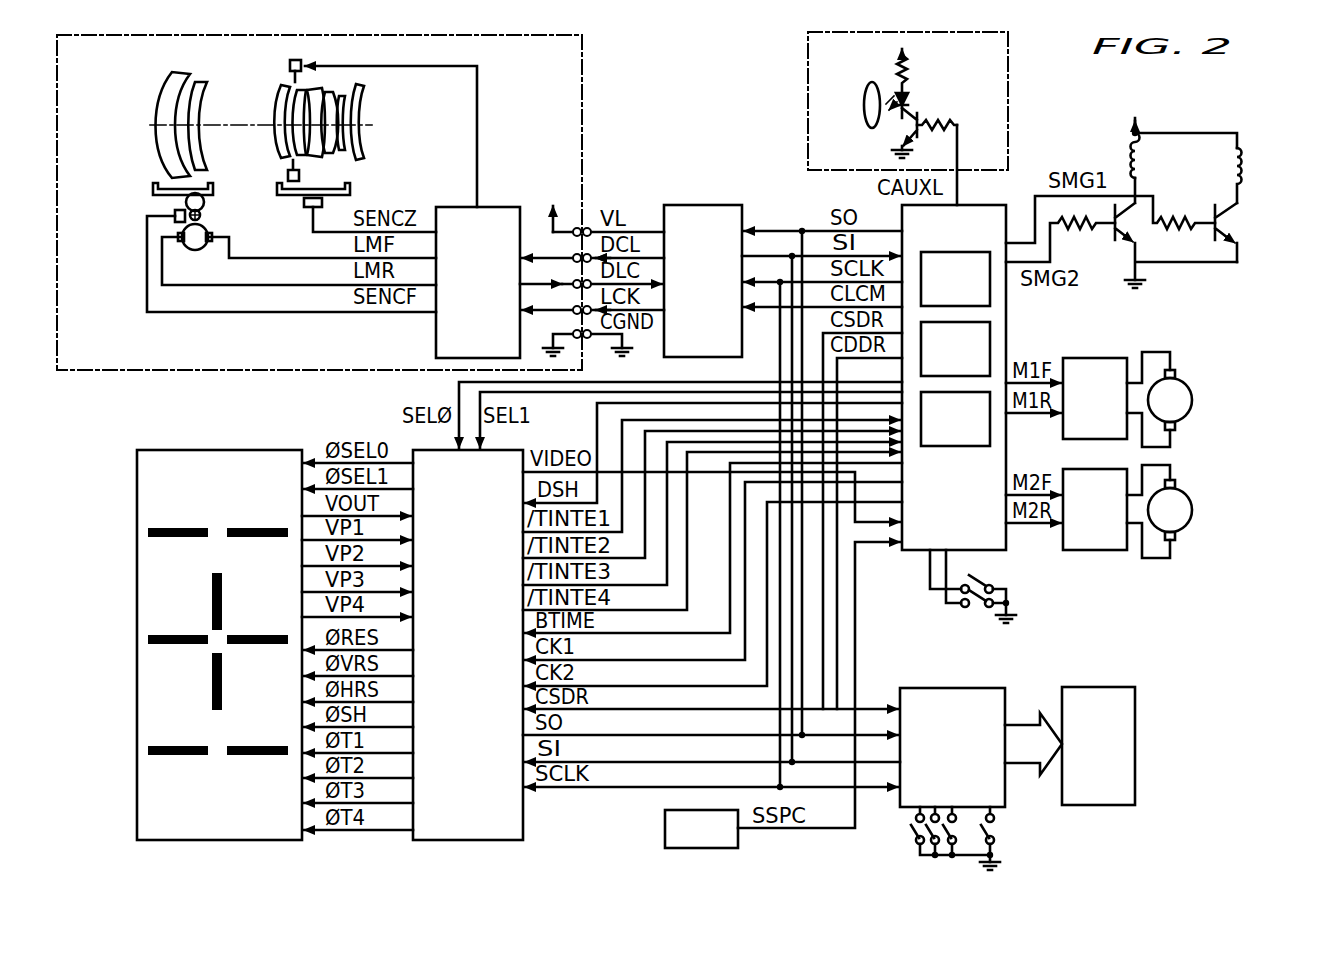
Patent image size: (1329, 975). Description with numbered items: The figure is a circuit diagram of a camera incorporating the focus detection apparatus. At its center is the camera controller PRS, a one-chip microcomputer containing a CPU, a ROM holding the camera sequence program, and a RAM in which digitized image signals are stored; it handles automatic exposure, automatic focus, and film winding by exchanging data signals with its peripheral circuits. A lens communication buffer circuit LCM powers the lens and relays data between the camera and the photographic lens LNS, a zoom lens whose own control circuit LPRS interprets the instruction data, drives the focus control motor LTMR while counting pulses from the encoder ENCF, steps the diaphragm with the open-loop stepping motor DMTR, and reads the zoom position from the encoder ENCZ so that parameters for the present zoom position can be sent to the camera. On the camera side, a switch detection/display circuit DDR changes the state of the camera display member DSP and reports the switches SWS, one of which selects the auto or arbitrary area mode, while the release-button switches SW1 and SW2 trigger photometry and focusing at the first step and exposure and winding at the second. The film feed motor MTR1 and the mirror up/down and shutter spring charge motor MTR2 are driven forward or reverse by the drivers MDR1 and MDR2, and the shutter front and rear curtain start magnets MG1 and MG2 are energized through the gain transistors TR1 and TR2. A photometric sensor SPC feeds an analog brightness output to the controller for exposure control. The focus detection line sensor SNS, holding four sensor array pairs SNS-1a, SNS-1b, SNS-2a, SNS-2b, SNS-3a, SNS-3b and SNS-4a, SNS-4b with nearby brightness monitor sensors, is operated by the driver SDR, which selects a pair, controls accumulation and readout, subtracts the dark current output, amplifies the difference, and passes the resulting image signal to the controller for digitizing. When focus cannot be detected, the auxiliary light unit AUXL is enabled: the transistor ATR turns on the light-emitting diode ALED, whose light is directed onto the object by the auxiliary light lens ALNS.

The photographic lens LNS is at (584, 106).
The stepping motor DMTR is at (289, 64).
The encoder ENCZ is at (324, 202).
The encoder ENCF is at (174, 214).
The focus control motor LTMR is at (206, 228).
The control circuit LPRS is at (478, 282).
The lens communication buffer circuit LCM is at (703, 281).
The camera controller PRS is at (954, 377).
The central processing unit CPU is at (955, 279).
The element ROM is at (955, 349).
The element RAM is at (955, 419).
The auxiliary light unit AUXL is at (806, 114).
The auxiliary light lens ALNS is at (868, 83).
The light-emitting diode ALED is at (909, 99).
The transistor ATR is at (923, 122).
The shutter front curtain start magnet MG1 is at (1246, 168).
The shutter rear curtain start magnet MG2 is at (1130, 150).
The gain transistor TR1 is at (1237, 222).
The gain transistor TR2 is at (1138, 212).
The driver MDR1 is at (1095, 398).
The driver MDR2 is at (1095, 509).
The film feed motor MTR1 is at (1190, 389).
The mirror up/down and shutter spring charge motor MTR2 is at (1185, 528).
The switch SW1 is at (981, 578).
The switch SW2 is at (975, 607).
The switch detection/display circuit DDR is at (952, 747).
The camera display member DSP is at (1098, 746).
The switches SWS is at (998, 840).
The photometric sensor SPC is at (782, 695).
The driver SDR is at (468, 645).
The focus detection line sensor SNS is at (219, 645).
The sensor array SNS-1a is at (268, 610).
The sensor array SNS-1b is at (178, 633).
The sensor array SNS-2a is at (260, 744).
The sensor array SNS-2b is at (178, 756).
The sensor array SNS-3a is at (250, 526).
The sensor array SNS-3b is at (178, 526).
The sensor array SNS-4a is at (211, 700).
The sensor array SNS-4b is at (223, 580).